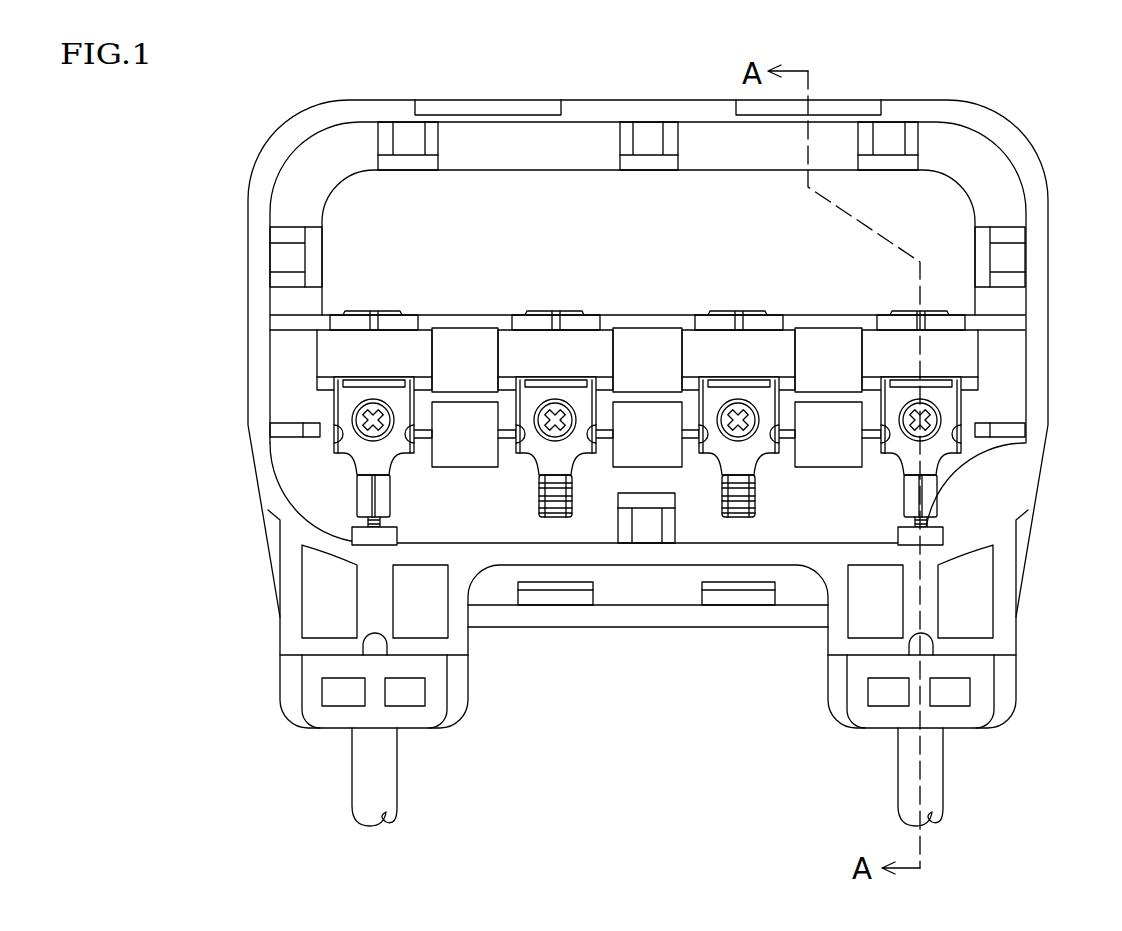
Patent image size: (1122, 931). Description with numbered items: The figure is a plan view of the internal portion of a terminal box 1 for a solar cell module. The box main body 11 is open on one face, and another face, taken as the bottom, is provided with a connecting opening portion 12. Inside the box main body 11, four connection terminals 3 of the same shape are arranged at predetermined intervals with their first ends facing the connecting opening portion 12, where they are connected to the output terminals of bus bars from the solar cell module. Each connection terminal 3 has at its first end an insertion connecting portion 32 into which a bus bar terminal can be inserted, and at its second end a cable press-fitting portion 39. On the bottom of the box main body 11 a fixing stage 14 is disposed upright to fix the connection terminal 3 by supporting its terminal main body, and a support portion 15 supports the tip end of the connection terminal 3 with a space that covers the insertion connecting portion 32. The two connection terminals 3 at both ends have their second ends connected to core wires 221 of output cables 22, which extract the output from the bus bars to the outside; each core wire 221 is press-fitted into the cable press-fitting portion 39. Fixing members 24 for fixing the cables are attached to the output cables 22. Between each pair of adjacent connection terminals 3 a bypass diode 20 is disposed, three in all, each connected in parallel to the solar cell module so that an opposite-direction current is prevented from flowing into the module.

The terminal box 1 is at (458, 90).
The box main body 11 is at (1010, 146).
The connecting opening portion 12 is at (565, 176).
The fixing stage 14 is at (605, 385).
The support portion 15 is at (395, 345).
The bypass diode 20 is at (474, 460).
The connection terminal 3 is at (522, 322).
The insertion connecting portion 32 is at (352, 314).
The cable press-fitting portion 39 is at (365, 493).
The core wire 221 is at (353, 527).
The fixing member 24 is at (440, 688).
The output cable 22 is at (357, 792).